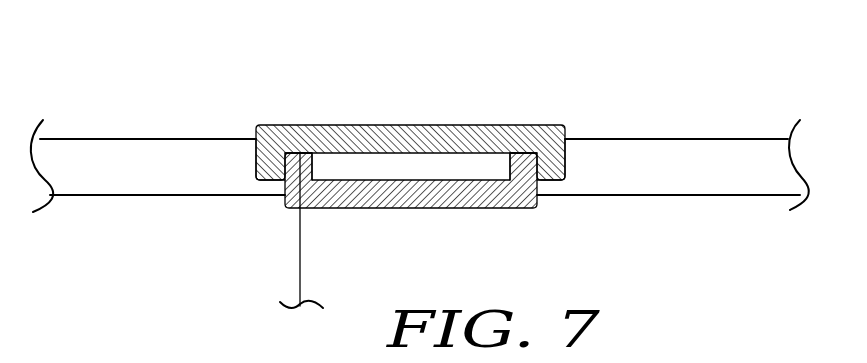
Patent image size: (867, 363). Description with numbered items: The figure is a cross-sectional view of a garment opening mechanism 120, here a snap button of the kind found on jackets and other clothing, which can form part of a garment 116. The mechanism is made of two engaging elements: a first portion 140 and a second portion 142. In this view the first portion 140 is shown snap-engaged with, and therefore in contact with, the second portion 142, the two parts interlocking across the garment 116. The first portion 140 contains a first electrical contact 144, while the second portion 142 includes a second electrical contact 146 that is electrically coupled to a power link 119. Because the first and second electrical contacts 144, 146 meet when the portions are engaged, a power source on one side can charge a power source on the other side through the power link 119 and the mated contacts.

The garment 116 is at (698, 160).
The power link 119 is at (299, 283).
The garment opening mechanism 120 is at (398, 150).
The first portion 140 is at (372, 125).
The second portion 142 is at (453, 210).
The first electrical contact 144 is at (266, 125).
The second electrical contact 146 is at (288, 163).